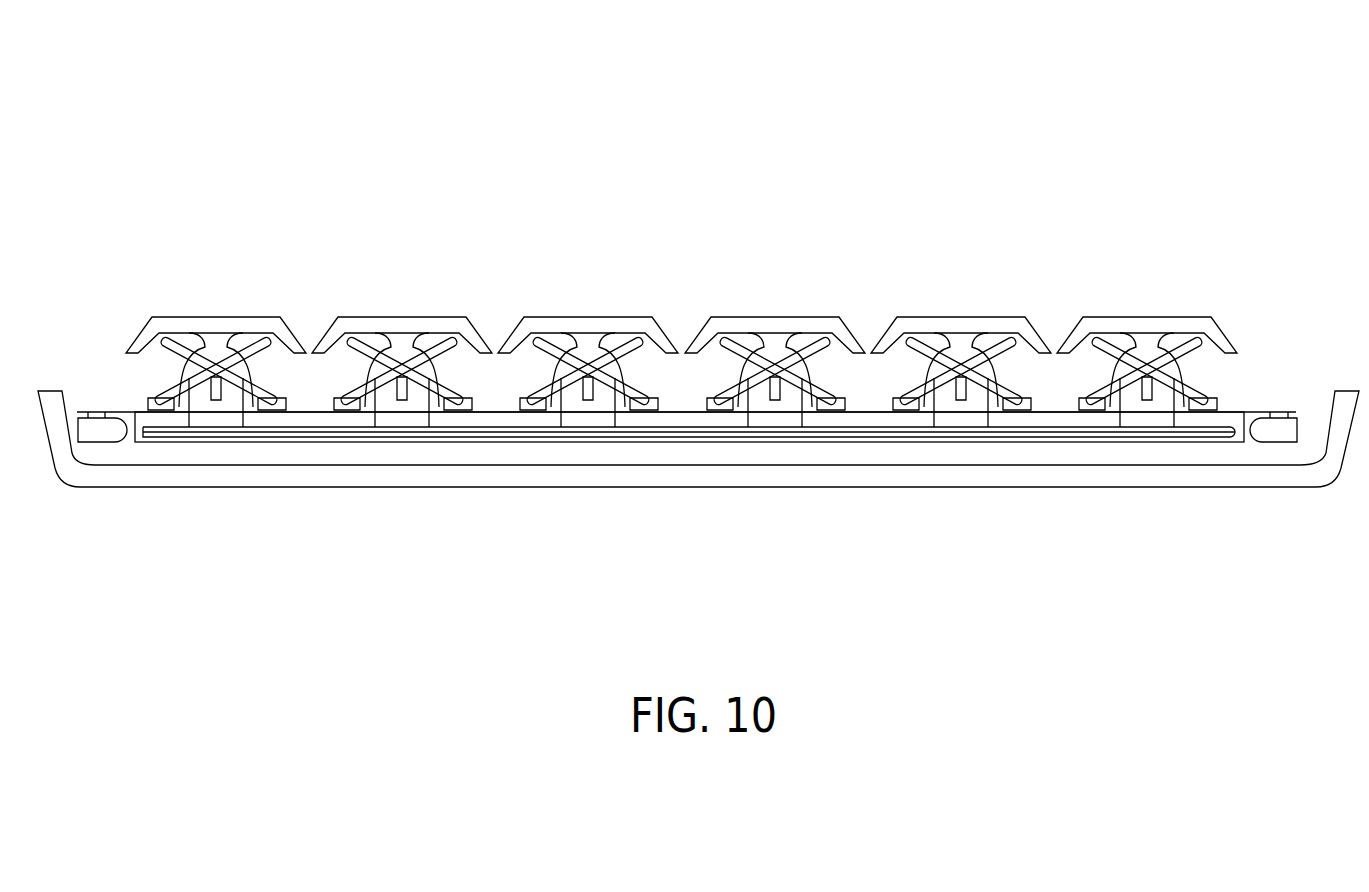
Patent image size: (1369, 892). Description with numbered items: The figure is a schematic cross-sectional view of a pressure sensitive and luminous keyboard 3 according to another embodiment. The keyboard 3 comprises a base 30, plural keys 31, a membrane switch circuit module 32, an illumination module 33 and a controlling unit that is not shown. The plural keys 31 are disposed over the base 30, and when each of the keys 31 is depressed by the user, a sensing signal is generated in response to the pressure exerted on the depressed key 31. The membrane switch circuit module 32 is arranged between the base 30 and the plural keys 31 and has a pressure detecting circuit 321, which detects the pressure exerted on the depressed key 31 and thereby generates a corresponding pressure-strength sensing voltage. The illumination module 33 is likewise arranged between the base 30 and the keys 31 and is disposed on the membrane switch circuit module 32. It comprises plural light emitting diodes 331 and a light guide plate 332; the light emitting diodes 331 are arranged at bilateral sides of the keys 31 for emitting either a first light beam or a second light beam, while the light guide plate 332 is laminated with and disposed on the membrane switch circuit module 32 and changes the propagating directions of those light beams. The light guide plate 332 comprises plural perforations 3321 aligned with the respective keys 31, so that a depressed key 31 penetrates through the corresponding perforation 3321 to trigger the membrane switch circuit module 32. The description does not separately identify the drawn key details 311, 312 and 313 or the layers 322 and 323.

The pressure sensitive and luminous keyboard 3 is at (697, 87).
The base 30 is at (1180, 470).
The keys 31 is at (694, 314).
The keycap 311 is at (1198, 320).
The scissor-type support mechanism 312 is at (1113, 335).
The elastic dome 313 is at (1147, 337).
The membrane switch circuit module 32 is at (689, 480).
The pressure detecting circuit 321 is at (928, 436).
The upper membrane layer 322 is at (882, 432).
The lower membrane layer 323 is at (983, 442).
The illumination module 33 is at (119, 408).
The light emitting diodes 331 is at (98, 435).
The light guide plate 332 is at (1037, 420).
The perforations 3321 is at (220, 418).